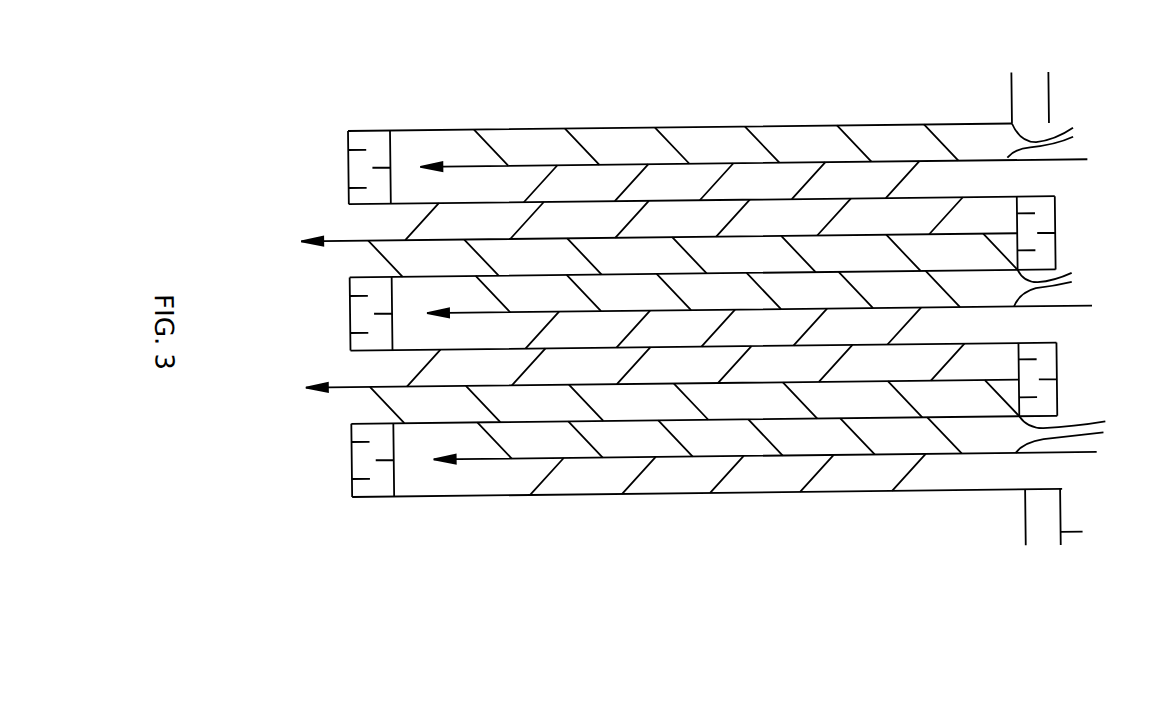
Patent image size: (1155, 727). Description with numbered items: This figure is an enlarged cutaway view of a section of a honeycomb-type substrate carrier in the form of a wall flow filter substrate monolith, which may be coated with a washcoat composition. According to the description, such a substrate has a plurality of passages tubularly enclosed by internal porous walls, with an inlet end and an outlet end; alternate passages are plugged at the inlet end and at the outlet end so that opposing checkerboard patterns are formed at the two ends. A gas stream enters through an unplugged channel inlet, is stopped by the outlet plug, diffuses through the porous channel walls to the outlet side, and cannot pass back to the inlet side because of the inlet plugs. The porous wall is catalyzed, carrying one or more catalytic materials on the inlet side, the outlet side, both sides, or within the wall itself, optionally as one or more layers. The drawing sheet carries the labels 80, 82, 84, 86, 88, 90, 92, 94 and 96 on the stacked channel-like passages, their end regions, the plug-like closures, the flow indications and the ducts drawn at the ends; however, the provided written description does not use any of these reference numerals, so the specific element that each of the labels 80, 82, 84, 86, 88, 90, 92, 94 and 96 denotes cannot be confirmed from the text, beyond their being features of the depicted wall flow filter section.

The inlet header 80 is at (348, 460).
The flow channel 82 is at (1141, 357).
The end wall 84 is at (348, 498).
The return header 86 is at (1095, 384).
The return channel 88 is at (1098, 510).
The channel wall 90 is at (978, 461).
The outlet duct 92 is at (1054, 139).
The outlet pipe 94 is at (1078, 540).
The inlet pipe 96 is at (1049, 93).